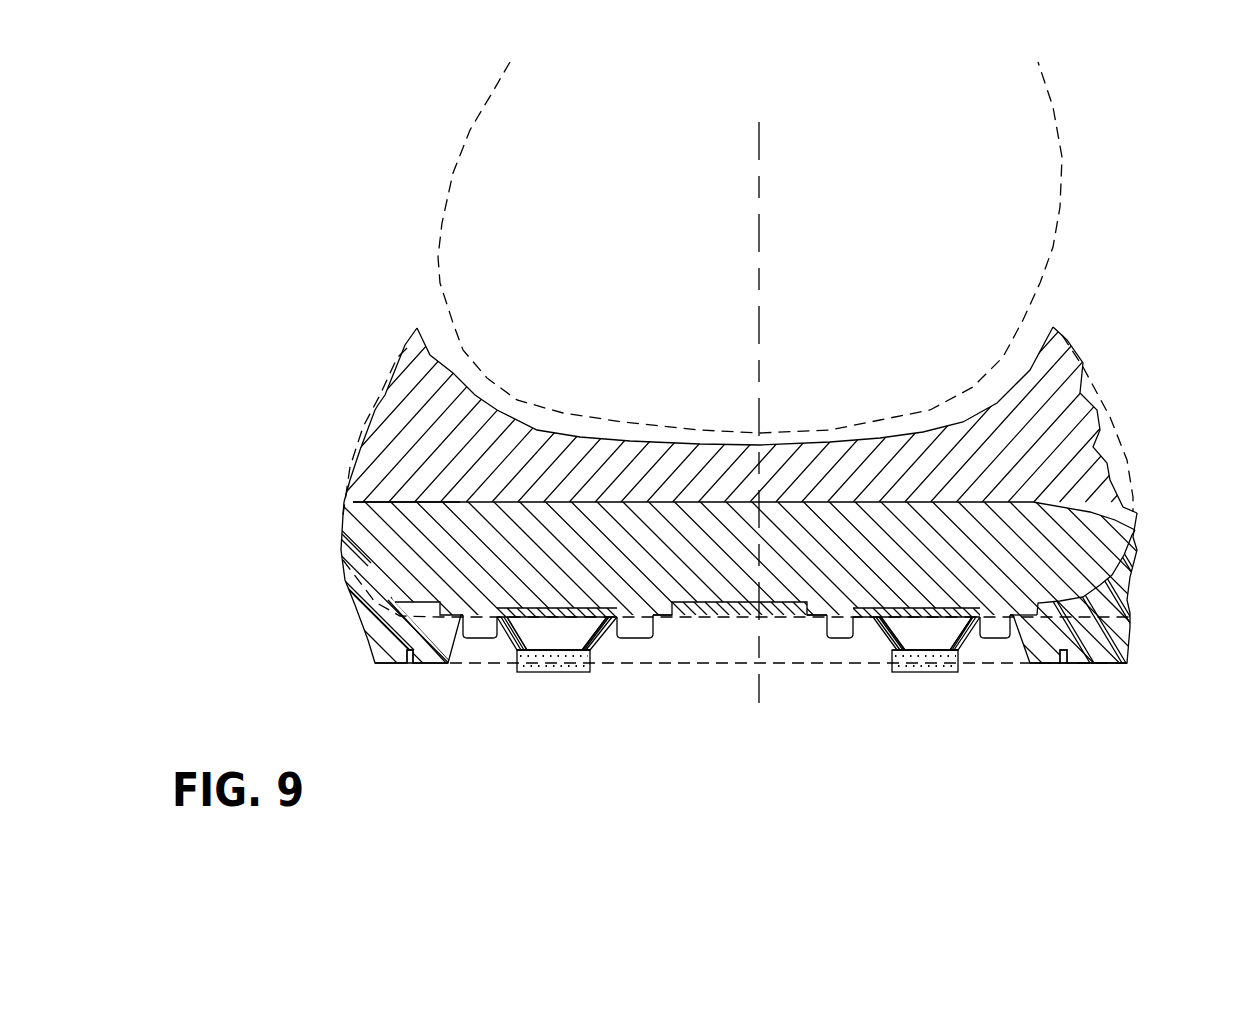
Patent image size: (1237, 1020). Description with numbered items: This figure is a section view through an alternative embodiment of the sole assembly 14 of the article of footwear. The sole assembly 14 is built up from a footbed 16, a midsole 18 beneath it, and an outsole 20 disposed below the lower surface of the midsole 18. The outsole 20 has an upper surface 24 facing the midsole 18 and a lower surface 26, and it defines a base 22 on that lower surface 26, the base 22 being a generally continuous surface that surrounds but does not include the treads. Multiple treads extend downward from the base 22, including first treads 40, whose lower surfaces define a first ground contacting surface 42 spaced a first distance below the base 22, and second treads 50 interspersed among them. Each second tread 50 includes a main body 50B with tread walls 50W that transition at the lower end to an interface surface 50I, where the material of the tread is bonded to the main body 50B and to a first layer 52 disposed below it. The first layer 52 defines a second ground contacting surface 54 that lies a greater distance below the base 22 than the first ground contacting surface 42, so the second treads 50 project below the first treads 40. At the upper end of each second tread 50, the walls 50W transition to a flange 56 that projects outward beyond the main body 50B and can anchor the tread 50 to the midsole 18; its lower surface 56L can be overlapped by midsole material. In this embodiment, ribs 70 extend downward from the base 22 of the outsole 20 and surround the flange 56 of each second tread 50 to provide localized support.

The sole assembly 14 is at (1138, 463).
The footbed 16 is at (1070, 433).
The midsole 18 is at (1067, 552).
The outsole 20 is at (1136, 602).
The base 22 is at (785, 620).
The upper surface 24 is at (738, 601).
The lower surface 26 is at (740, 618).
The first treads 40 is at (398, 670).
The first ground contacting surface 42 is at (432, 668).
The second treads 50 is at (606, 645).
The main body 50B is at (552, 668).
The interface surface 50I is at (518, 608).
The tread walls 50W is at (506, 655).
The first layer 52 is at (555, 672).
The second ground contacting surface 54 is at (573, 672).
The flange 56 is at (597, 608).
The lower surface 56L is at (405, 508).
The ribs 70 is at (478, 640).